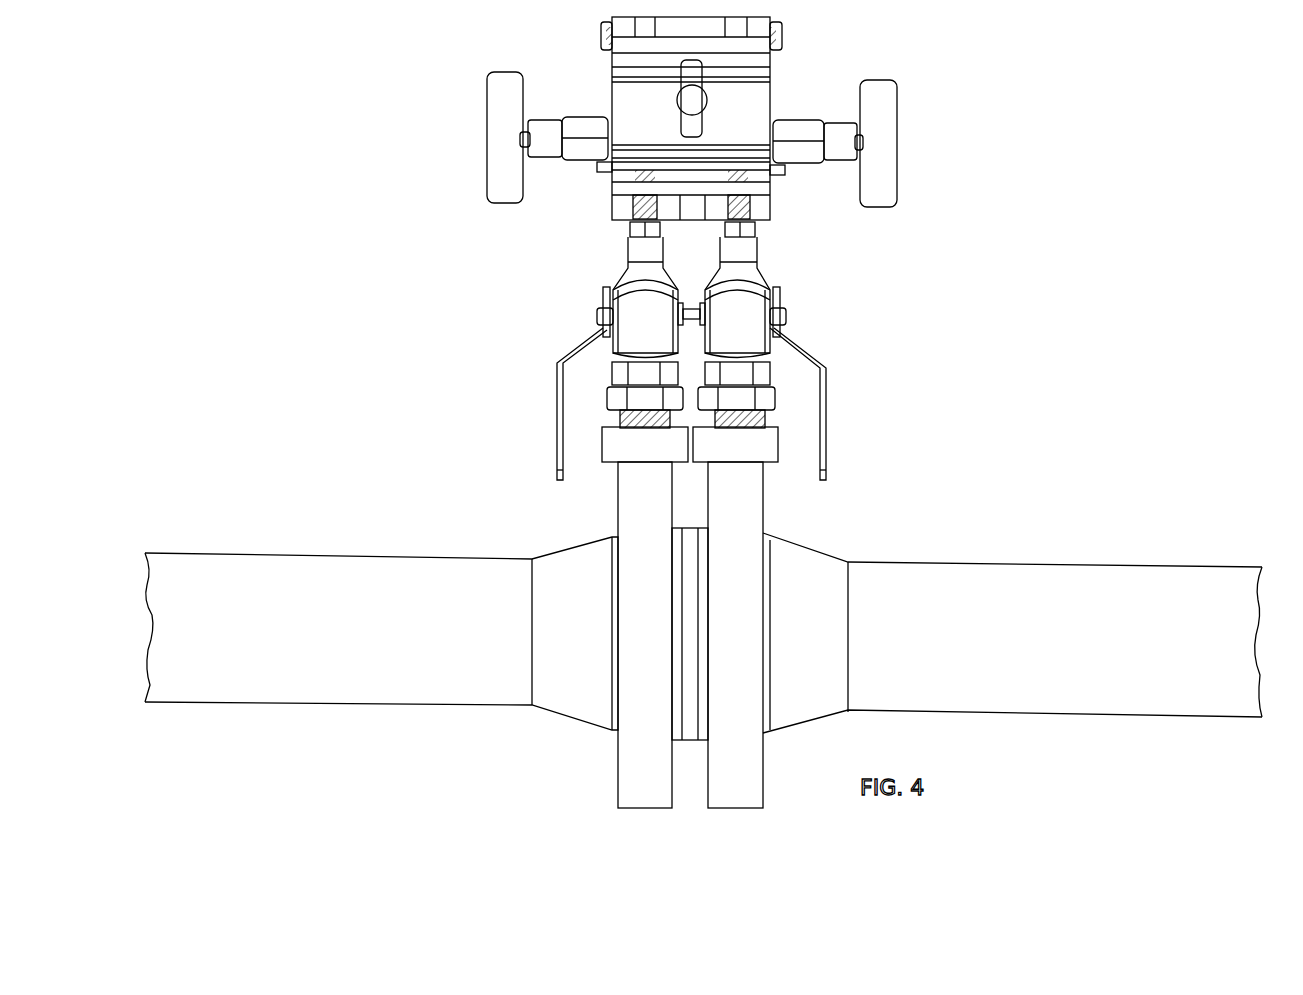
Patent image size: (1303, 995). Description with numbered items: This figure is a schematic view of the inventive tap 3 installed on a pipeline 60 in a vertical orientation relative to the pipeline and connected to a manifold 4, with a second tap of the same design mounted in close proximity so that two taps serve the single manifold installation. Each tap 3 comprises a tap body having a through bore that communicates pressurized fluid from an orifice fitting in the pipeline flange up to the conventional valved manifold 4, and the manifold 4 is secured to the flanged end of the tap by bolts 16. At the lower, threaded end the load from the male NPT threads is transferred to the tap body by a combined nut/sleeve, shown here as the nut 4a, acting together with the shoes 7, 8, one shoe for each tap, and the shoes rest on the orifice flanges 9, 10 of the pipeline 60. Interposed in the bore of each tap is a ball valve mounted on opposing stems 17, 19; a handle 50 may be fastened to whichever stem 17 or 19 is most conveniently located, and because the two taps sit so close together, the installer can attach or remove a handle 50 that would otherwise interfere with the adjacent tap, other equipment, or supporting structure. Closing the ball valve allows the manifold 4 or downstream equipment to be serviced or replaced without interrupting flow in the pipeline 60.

The tap 3 is at (628, 264).
The manifold 4 is at (775, 92).
The manifold connection nut 4a is at (607, 400).
The shoe 7 is at (655, 459).
The shoe 8 is at (746, 459).
The first orifice flange 9 is at (653, 622).
The second orifice flange 10 is at (748, 617).
The bolt 16 is at (630, 228).
The stem 17 is at (597, 317).
The stem 19 is at (684, 306).
The handle 50 is at (556, 422).
The pipeline 60 is at (1025, 562).